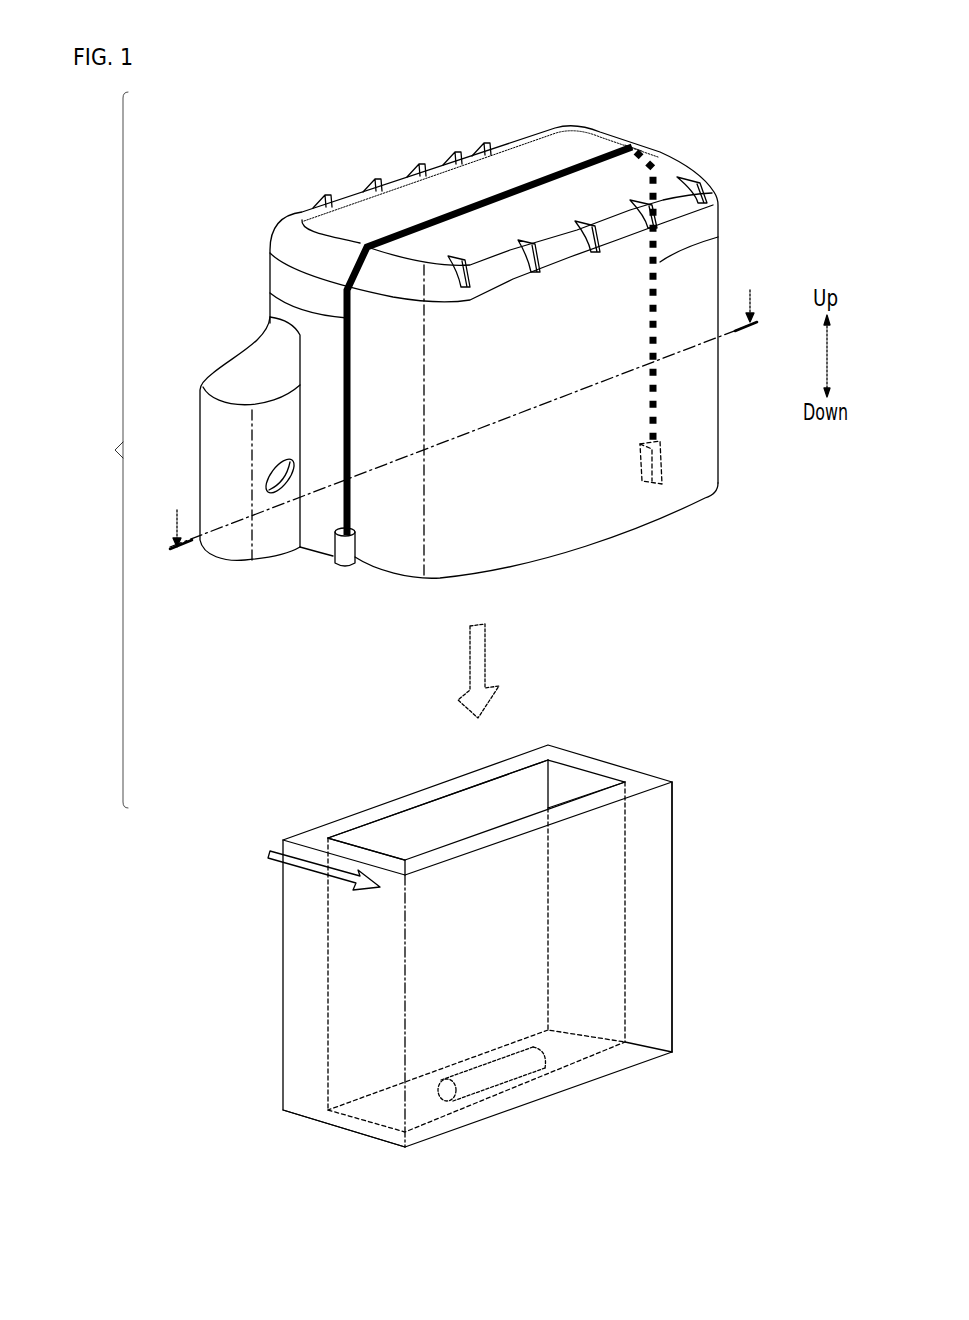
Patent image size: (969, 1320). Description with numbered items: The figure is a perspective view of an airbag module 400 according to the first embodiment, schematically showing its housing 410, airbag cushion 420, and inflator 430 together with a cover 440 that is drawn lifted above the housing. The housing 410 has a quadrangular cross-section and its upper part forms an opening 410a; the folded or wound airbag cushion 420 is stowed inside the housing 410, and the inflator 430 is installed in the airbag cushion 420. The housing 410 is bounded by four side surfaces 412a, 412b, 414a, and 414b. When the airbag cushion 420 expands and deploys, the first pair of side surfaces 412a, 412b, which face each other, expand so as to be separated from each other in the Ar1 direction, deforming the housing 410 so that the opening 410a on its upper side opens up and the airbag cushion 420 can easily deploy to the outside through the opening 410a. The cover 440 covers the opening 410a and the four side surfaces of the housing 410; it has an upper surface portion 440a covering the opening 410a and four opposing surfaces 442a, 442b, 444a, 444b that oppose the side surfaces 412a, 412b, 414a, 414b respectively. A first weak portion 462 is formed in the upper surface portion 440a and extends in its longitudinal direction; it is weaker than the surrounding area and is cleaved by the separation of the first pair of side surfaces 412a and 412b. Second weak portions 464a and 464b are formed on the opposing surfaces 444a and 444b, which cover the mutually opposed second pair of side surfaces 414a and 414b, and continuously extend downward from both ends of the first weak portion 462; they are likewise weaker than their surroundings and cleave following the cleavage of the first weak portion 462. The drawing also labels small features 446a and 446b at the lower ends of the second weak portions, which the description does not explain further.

The airbag module 400 is at (101, 450).
The cover 440 is at (176, 167).
The upper surface portion 440a is at (568, 140).
The opposing surface 442a is at (583, 530).
The opposing surface 442b is at (358, 200).
The opposing surface 444a is at (657, 152).
The opposing surface 444b is at (315, 530).
The first terminal portion 446a is at (665, 460).
The second terminal portion 446b is at (352, 547).
The first weak portion 462 is at (530, 177).
The second weak portion 464a is at (700, 240).
The second weak portion 464b is at (270, 293).
The housing 410 is at (193, 796).
The opening 410a is at (563, 778).
The side surface 412a is at (430, 1045).
The side surface 412b is at (450, 790).
The side surface 414a is at (663, 893).
The side surface 414b is at (357, 855).
The airbag cushion 420 is at (327, 960).
The inflator 430 is at (507, 1077).
The Ar1 direction Ar1 is at (305, 872).